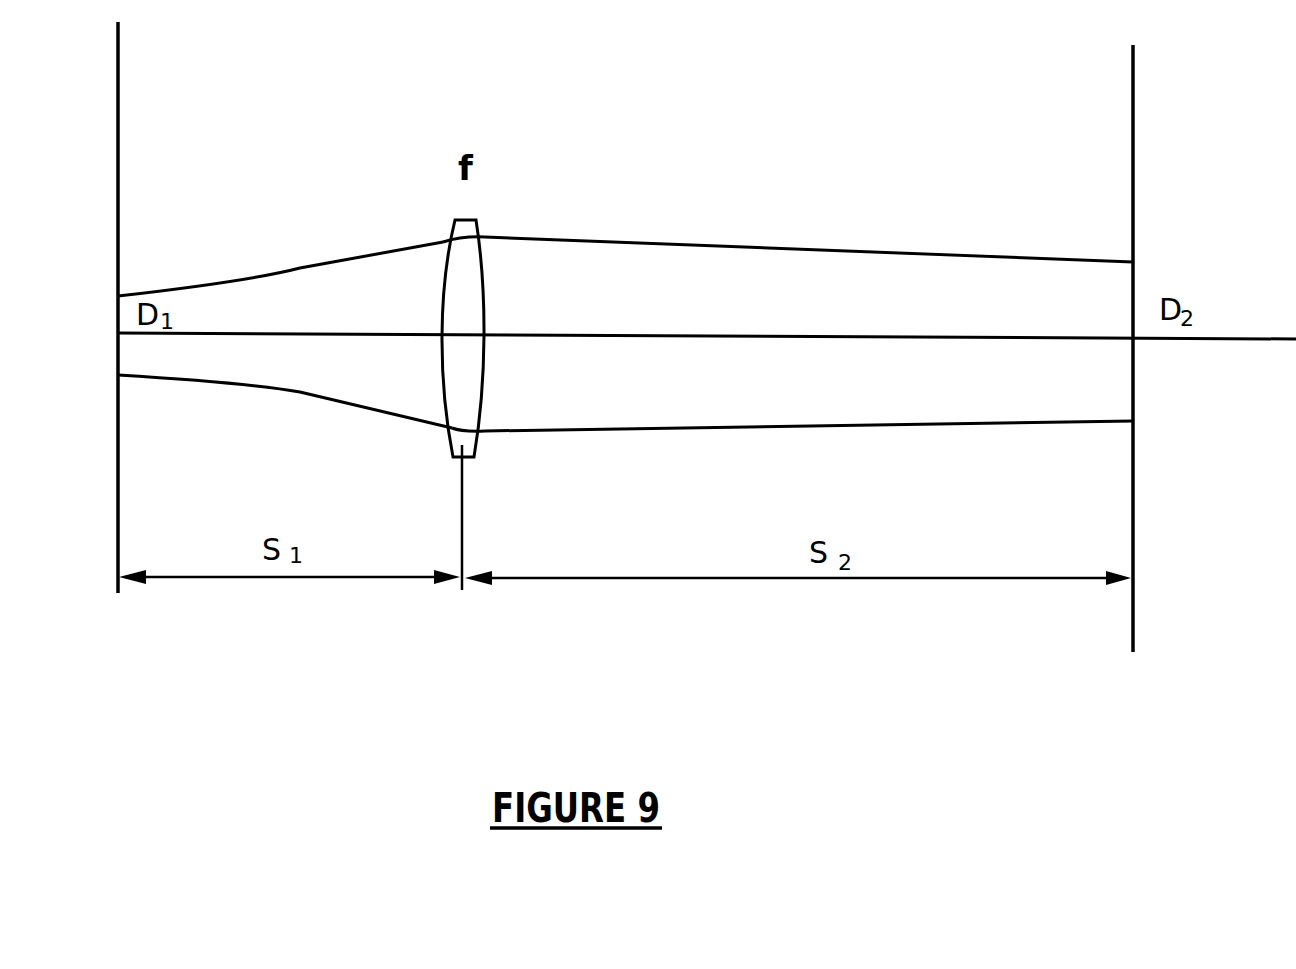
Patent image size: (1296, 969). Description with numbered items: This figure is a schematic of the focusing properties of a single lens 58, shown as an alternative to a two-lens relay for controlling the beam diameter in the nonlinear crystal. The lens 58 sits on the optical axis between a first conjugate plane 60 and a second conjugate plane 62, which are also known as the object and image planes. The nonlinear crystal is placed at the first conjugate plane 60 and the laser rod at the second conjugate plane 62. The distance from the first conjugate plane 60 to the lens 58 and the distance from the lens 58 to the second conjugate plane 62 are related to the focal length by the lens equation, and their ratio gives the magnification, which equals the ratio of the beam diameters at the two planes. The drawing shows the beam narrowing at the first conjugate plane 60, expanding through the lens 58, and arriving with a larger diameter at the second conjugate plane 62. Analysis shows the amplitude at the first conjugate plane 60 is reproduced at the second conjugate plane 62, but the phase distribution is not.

The single lens 58 is at (478, 229).
The first conjugate plane 60 is at (119, 91).
The second conjugate plane 62 is at (1134, 88).